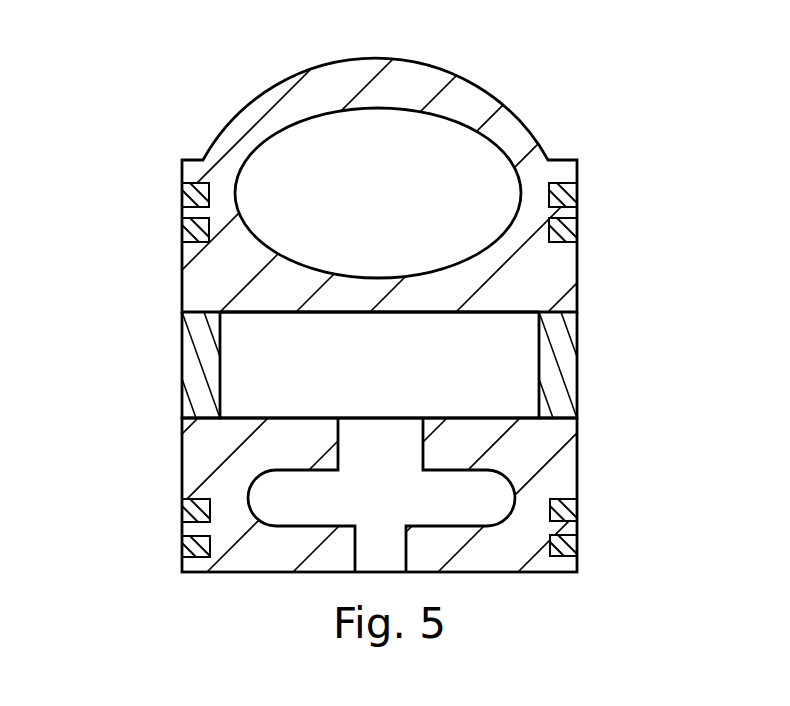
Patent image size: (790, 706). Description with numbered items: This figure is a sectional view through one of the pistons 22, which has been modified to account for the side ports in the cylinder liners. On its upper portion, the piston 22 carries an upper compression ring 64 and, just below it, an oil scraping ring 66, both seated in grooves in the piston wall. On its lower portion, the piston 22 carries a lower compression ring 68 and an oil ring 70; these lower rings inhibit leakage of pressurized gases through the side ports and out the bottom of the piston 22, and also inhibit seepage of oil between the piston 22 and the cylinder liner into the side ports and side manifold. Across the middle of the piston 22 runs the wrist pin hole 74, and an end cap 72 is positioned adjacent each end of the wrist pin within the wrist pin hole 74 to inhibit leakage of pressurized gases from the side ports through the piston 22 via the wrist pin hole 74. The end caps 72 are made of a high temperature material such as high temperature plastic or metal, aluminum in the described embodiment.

The piston 22 is at (577, 272).
The upper compression ring 64 is at (577, 193).
The oil scraping ring 66 is at (577, 229).
The lower compression ring 68 is at (577, 510).
The oil ring 70 is at (577, 547).
The end cap 72 is at (577, 375).
The wrist pin hole 74 is at (262, 373).